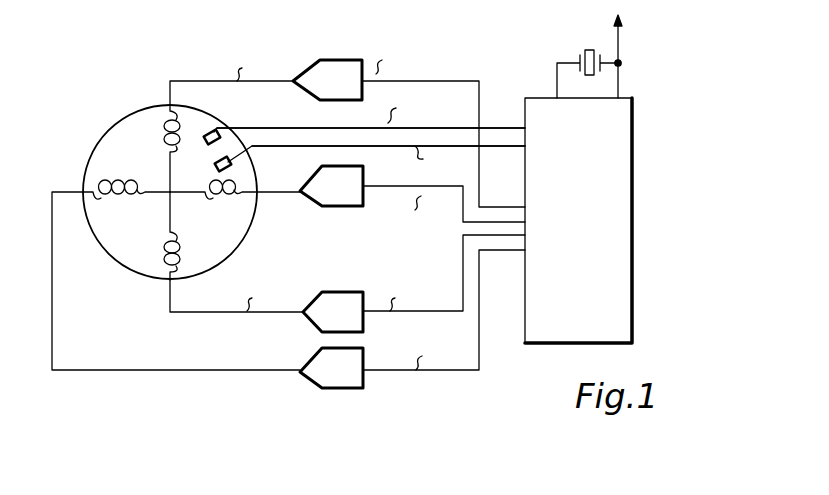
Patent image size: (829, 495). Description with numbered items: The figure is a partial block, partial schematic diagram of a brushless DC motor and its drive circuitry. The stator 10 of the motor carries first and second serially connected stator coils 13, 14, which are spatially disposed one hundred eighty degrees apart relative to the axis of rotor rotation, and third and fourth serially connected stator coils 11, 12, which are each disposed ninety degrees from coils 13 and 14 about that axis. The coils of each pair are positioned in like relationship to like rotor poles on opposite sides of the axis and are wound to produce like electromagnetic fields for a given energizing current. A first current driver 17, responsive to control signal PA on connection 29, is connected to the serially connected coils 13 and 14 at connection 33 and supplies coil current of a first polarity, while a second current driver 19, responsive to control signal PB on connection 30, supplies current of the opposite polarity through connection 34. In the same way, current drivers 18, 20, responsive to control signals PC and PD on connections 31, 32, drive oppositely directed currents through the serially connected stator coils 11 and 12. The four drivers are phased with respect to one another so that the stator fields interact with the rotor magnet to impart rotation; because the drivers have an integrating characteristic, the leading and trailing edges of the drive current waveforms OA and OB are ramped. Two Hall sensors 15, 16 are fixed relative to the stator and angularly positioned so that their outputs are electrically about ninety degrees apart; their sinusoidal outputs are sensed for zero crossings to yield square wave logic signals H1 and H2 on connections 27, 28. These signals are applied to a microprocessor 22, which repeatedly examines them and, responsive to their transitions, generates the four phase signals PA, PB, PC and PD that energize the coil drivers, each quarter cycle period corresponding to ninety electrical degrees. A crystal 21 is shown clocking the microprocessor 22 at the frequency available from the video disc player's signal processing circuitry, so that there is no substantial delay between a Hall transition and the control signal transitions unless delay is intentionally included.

The stator 10 is at (103, 138).
The third stator coil 11 is at (118, 200).
The fourth stator coil 12 is at (208, 200).
The first stator coil 13 is at (164, 139).
The second stator coil 14 is at (157, 248).
The Hall sensor 15 is at (219, 125).
The Hall sensor 16 is at (235, 163).
The first current driver 17 is at (348, 60).
The current driver 18 is at (372, 160).
The second current driver 19 is at (348, 290).
The current driver 20 is at (368, 348).
The crystal oscillator 21 is at (590, 50).
The microprocessor 22 is at (633, 207).
The connection 27 is at (498, 124).
The connection 28 is at (498, 148).
The connection 29 is at (431, 69).
The connection 30 is at (462, 264).
The connection 31 is at (462, 222).
The connection 32 is at (458, 372).
The connection 33 is at (170, 81).
The connection 34 is at (170, 312).